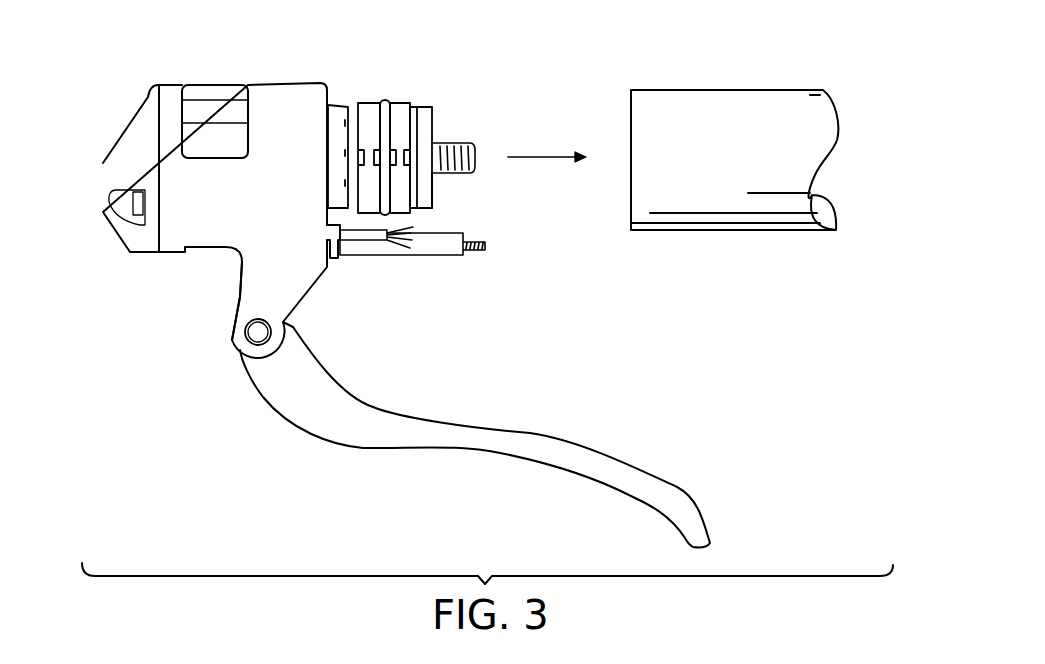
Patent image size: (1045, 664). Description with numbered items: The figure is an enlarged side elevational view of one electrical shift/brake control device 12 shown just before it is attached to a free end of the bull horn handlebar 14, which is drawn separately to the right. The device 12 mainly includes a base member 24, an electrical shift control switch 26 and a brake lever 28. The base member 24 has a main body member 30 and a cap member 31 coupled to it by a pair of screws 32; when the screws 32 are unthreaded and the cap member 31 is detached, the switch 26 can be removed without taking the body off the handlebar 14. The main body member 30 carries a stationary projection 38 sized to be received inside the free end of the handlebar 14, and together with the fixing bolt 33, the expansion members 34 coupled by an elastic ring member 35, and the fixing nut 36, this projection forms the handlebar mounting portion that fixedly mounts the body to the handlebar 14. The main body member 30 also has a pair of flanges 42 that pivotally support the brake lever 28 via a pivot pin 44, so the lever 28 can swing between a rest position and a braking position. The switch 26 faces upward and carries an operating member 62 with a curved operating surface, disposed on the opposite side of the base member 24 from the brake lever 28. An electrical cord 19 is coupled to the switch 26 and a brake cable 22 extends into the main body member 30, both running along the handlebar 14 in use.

The electrical shift/brake control device 12 is at (134, 78).
The handlebar 14 is at (730, 84).
The electrical cord 19 is at (358, 237).
The brake cable 22 is at (440, 255).
The base member 24 is at (280, 78).
The electrical shift control switch 26 is at (234, 76).
The brake lever 28 is at (485, 418).
The main body member 30 is at (223, 197).
The cap member 31 is at (130, 150).
The screws 32 is at (133, 205).
The fixing bolt 33 is at (465, 142).
The expansion members 34 is at (420, 143).
The elastic ring member 35 is at (385, 100).
The fixing nut 36 is at (433, 192).
The stationary projection 38 is at (337, 107).
The flanges 42 is at (280, 285).
The pivot pin 44 is at (257, 332).
The operating member 62 is at (197, 85).